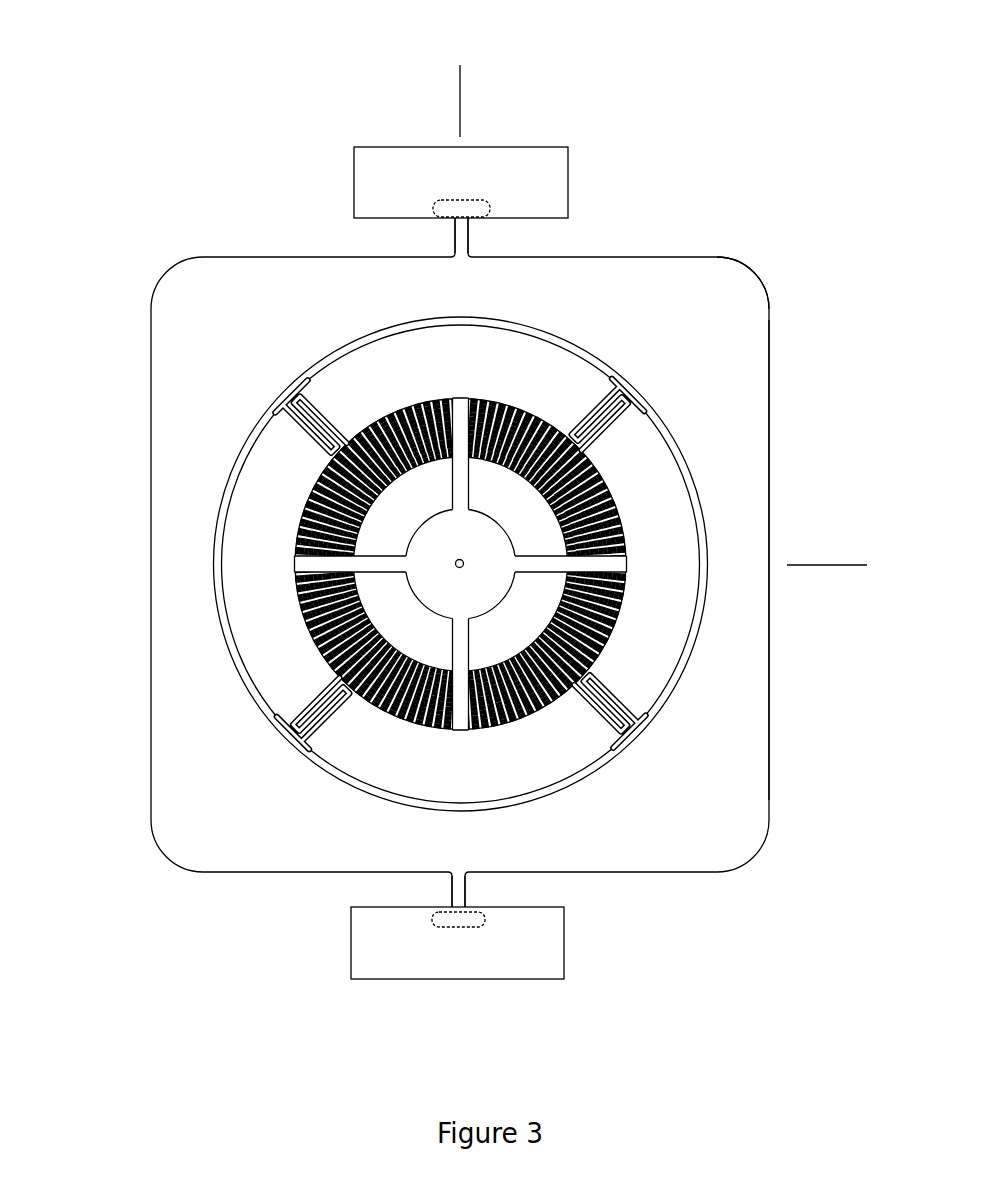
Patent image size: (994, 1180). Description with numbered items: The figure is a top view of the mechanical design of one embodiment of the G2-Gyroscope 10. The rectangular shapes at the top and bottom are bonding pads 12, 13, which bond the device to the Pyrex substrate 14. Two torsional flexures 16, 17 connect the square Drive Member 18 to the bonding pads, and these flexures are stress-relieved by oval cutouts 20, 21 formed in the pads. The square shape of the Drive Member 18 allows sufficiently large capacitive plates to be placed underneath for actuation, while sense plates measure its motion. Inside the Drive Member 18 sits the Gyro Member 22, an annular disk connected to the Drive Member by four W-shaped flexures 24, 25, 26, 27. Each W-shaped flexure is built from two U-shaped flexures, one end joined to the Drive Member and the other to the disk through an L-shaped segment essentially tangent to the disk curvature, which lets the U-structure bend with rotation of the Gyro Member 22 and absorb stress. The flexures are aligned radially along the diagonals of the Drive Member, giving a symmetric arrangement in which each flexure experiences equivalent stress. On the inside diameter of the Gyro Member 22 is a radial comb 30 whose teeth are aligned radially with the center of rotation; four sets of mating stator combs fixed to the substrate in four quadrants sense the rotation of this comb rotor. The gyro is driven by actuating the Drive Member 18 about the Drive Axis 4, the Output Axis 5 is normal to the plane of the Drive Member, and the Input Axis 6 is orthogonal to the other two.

The Drive Axis 4 is at (520, 87).
The Output Axis 5 is at (470, 572).
The Input Axis 6 is at (848, 590).
The G2-Gyroscope 10 is at (763, 225).
The bonding pad 12 is at (547, 177).
The bonding pad 13 is at (540, 944).
The Pyrex substrate 14 is at (811, 283).
The torsional flexure 16 is at (410, 889).
The torsional flexure 17 is at (432, 235).
The Drive Member 18 is at (715, 375).
The oval cutout 20 is at (428, 198).
The oval cutout 21 is at (418, 923).
The Gyro Member 22 is at (258, 500).
The W-shaped flexure 24 is at (273, 370).
The W-shaped flexure 25 is at (645, 377).
The W-shaped flexure 26 is at (645, 753).
The W-shaped flexure 27 is at (268, 743).
The radial comb 30 is at (378, 596).